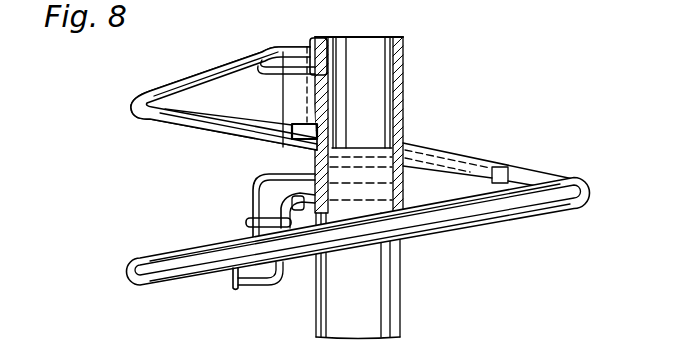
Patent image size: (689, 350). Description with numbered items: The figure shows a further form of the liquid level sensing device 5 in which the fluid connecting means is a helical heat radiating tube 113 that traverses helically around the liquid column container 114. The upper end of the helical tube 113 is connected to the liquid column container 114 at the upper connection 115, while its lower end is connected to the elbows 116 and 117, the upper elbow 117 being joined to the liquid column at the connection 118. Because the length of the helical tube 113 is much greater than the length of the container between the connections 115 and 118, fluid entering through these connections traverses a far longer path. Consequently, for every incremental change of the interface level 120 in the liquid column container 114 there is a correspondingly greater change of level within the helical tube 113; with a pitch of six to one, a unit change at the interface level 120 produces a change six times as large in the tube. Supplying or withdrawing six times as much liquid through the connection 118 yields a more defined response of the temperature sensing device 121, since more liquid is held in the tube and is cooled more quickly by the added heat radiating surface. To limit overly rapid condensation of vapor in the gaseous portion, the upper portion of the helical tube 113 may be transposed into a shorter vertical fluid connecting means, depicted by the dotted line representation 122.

The liquid level sensing device 5 is at (405, 43).
The liquid column container 114 is at (405, 77).
The upper connection 115 is at (308, 47).
The helical heat radiating tube 113 is at (223, 117).
The dotted line representation of vertical fluid connecting means 122 is at (258, 82).
The interface level 120 is at (363, 143).
The temperature sensing device 121 is at (508, 168).
The lower connection 118 is at (313, 173).
The upper elbow 117 is at (257, 195).
The lower elbow 116 is at (265, 273).